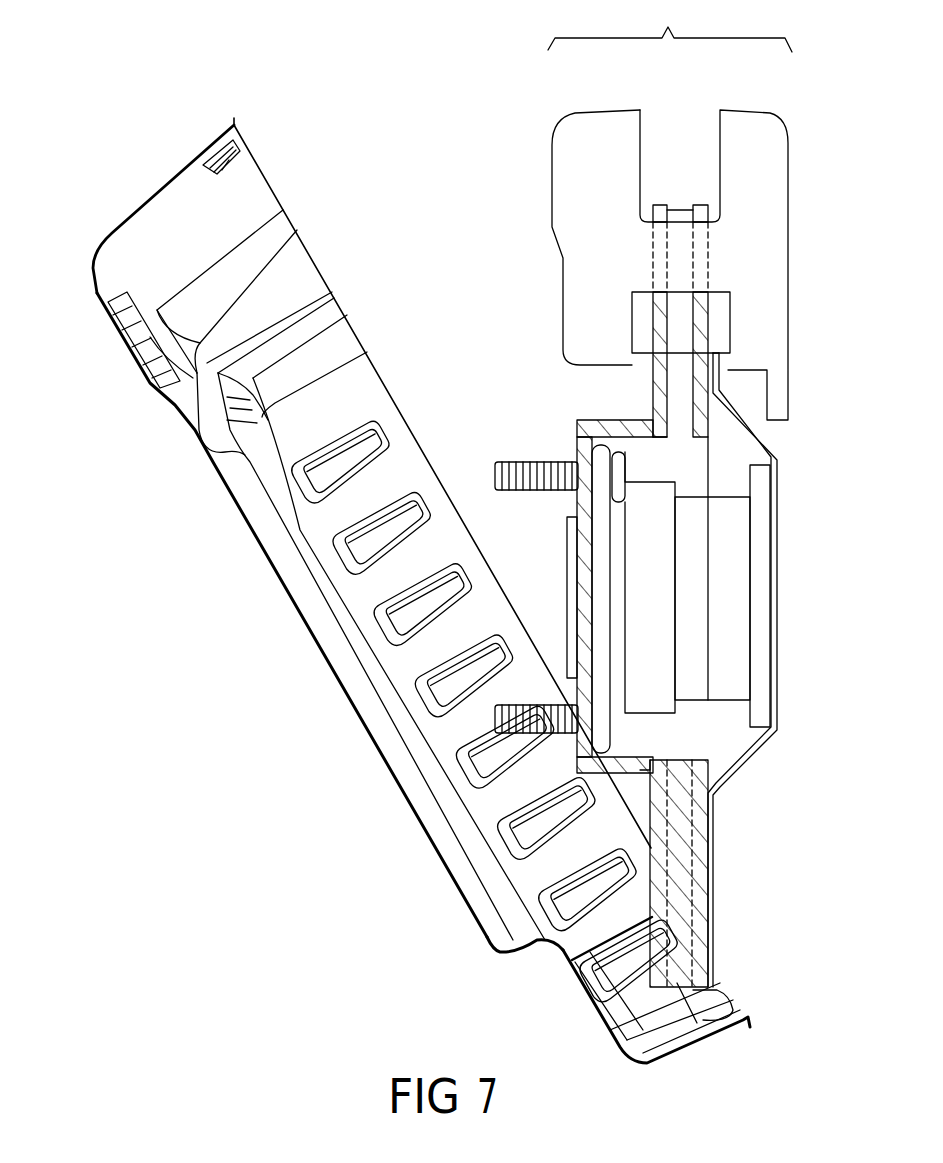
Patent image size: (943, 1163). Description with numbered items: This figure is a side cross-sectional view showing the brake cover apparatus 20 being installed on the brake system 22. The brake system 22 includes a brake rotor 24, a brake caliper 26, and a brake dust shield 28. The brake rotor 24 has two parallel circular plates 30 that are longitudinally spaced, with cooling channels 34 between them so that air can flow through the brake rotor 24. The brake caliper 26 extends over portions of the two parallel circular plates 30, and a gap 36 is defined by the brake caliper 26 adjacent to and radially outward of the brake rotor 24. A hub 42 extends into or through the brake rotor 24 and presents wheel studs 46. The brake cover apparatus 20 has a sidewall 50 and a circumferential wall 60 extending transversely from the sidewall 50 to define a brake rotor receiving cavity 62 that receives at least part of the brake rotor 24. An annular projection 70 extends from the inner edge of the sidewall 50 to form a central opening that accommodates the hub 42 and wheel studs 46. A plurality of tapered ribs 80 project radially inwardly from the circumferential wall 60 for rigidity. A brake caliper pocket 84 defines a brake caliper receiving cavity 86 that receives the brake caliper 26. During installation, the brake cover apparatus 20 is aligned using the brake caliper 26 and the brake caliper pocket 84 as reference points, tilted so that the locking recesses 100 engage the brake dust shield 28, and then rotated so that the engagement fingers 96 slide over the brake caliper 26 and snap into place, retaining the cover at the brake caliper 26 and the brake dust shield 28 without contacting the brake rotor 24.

The brake cover apparatus 20 is at (114, 94).
The brake system 22 is at (669, 210).
The brake rotor 24 is at (640, 393).
The brake caliper 26 is at (583, 181).
The brake dust shield 28 is at (717, 875).
The parallel circular plates 30 is at (700, 338).
The cooling channels 34 is at (679, 425).
The gap 36 is at (695, 128).
The hub 42 is at (655, 600).
The wheel studs 46 is at (538, 460).
The sidewall 50 is at (410, 680).
The circumferential wall 60 is at (570, 935).
The brake rotor receiving cavity 62 is at (505, 565).
The annular projection 70 is at (405, 815).
The ribs 80 is at (357, 553).
The brake caliper pocket 84 is at (100, 352).
The brake caliper receiving cavity 86 is at (312, 212).
The engagement fingers 96 is at (238, 156).
The locking recesses 100 is at (713, 1012).